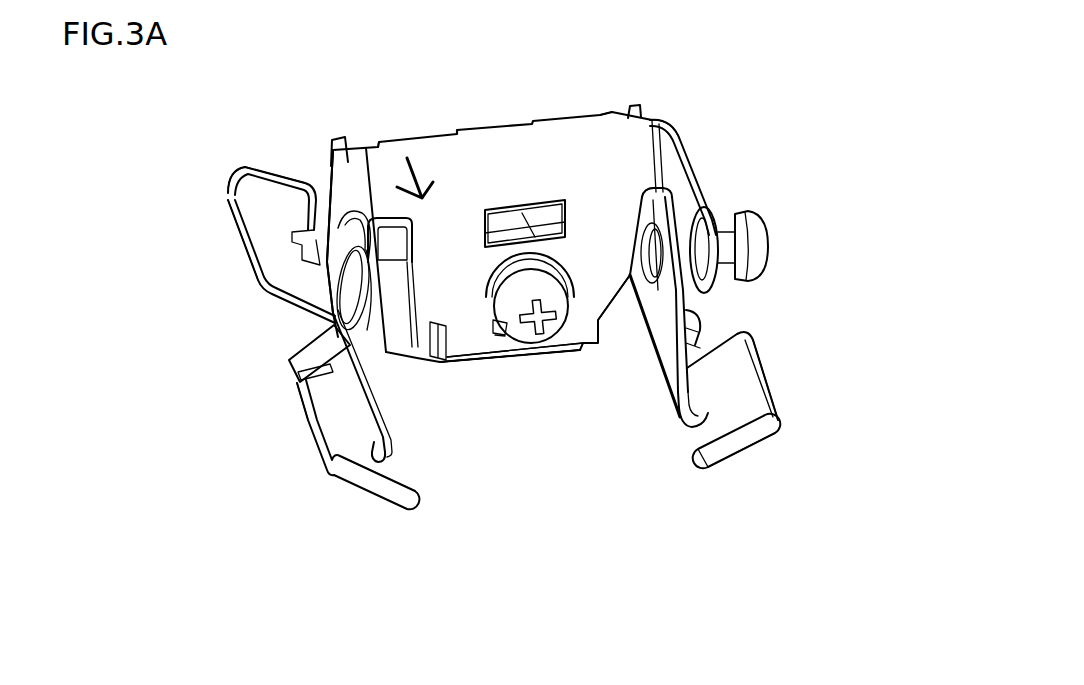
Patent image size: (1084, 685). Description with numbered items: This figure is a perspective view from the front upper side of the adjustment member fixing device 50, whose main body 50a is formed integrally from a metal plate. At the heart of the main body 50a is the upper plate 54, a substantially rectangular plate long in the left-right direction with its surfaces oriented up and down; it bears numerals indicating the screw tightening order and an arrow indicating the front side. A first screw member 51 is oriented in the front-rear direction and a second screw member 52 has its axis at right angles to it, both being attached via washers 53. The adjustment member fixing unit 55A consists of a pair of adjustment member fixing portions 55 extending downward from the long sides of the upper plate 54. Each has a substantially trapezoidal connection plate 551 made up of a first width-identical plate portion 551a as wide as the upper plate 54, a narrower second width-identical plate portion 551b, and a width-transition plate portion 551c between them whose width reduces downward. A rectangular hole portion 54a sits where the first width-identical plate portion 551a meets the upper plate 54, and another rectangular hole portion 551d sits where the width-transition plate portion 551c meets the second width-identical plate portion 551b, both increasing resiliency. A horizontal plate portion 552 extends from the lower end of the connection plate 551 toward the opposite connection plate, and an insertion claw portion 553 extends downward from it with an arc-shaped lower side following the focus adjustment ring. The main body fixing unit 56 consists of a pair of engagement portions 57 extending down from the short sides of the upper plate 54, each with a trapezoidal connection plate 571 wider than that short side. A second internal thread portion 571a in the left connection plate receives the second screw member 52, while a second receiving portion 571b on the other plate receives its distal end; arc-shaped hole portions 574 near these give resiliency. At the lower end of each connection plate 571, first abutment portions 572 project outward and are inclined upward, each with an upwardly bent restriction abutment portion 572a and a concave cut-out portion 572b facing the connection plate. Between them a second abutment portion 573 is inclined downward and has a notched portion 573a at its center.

The adjustment member fixing device 50 is at (288, 95).
The main body 50a is at (588, 138).
The first screw member 51 is at (527, 330).
The second screw member 52 is at (753, 225).
The washer 53 is at (495, 290).
The upper plate 54 is at (435, 157).
The hole portion 54a is at (545, 220).
The adjustment member fixing portion 55 is at (368, 138).
The adjustment member fixing unit 55A is at (511, 377).
The main body fixing unit 56 is at (372, 540).
The engagement portion 57 is at (285, 407).
The connection plate 551 is at (602, 277).
The first width-identical plate portion 551a is at (588, 223).
The second width-identical plate portion 551b is at (497, 337).
The width-transition plate portion 551c is at (590, 295).
The hole portion 551d is at (501, 330).
The horizontal plate portion 552 is at (432, 345).
The insertion claw portion 553 is at (552, 347).
The connection plate 571 is at (335, 180).
The second internal thread portion 571a is at (643, 265).
The second receiving portion 571b is at (347, 290).
The first abutment portion 572 is at (240, 225).
The restriction abutment portion 572a is at (270, 187).
The cut-out portion 572b is at (300, 247).
The second abutment portion 573 is at (307, 357).
The notched portion 573a is at (290, 376).
The arc-shaped hole portion 574 is at (345, 223).